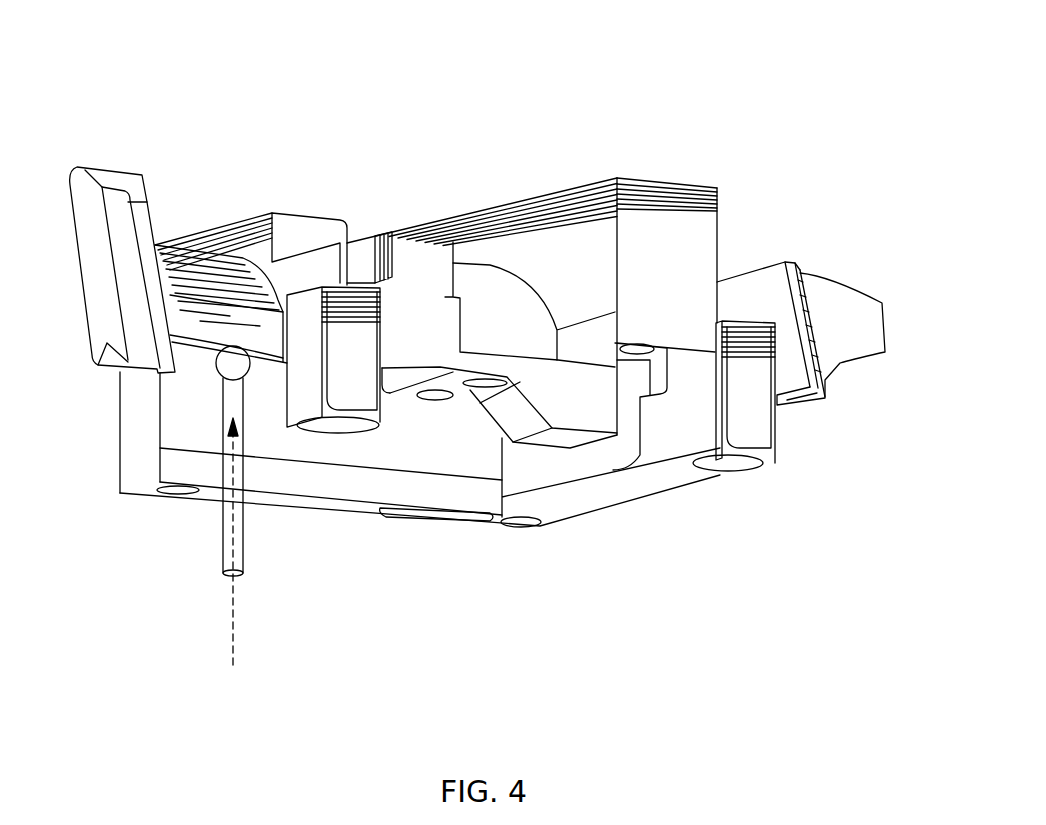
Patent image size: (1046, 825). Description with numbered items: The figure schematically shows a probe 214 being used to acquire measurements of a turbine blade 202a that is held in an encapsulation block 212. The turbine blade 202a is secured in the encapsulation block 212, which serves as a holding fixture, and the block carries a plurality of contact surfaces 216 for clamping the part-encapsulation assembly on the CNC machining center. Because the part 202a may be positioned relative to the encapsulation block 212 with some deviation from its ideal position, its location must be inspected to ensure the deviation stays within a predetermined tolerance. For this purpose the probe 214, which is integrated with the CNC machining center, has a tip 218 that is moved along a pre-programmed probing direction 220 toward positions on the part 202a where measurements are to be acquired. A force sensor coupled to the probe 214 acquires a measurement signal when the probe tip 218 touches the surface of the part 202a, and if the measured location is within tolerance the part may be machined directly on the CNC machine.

The encapsulation block 212 is at (547, 242).
The turbine blade 202a is at (835, 316).
The probe 214 is at (226, 542).
The contact surfaces 216 is at (353, 380).
The probe tip 218 is at (224, 370).
The probing direction 220 is at (231, 558).